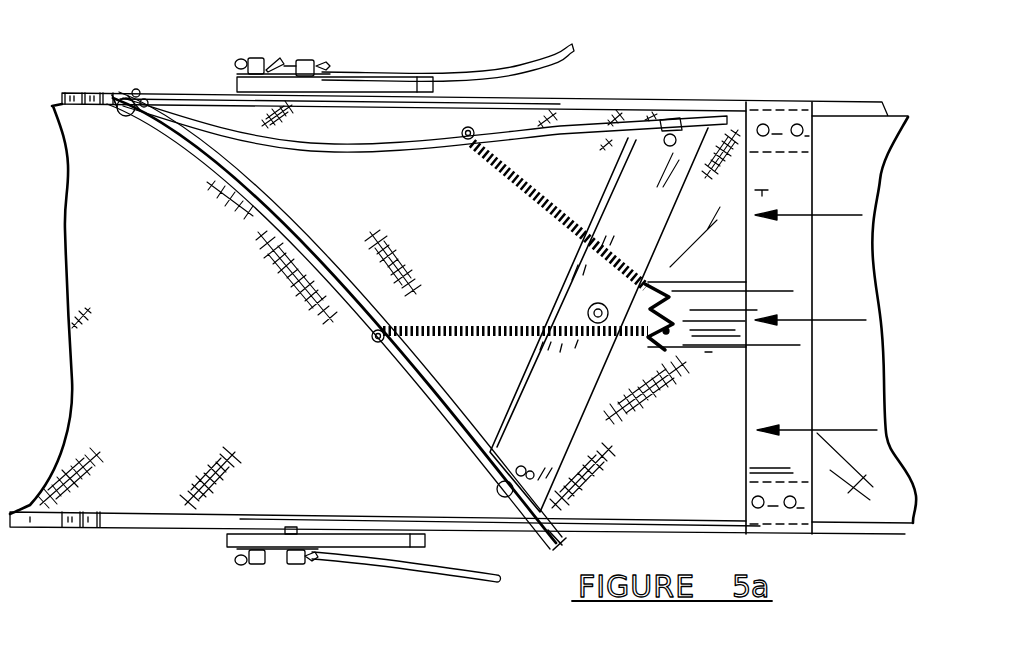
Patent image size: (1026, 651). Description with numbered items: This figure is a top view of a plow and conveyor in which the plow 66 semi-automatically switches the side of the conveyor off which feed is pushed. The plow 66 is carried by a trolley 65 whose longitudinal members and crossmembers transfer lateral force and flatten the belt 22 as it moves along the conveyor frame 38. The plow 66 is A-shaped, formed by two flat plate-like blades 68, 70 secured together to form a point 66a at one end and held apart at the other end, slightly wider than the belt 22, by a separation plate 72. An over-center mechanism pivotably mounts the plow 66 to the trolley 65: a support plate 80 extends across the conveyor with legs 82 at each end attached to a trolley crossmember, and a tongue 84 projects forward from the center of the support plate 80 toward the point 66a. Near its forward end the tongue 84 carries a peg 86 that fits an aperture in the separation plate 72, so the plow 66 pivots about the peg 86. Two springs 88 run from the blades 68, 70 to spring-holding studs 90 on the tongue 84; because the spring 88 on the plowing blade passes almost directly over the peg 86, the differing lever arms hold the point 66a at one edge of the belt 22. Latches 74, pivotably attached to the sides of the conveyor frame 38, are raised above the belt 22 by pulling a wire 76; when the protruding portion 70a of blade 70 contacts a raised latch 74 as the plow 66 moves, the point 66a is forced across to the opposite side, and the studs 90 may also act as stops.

The belt 22 is at (163, 488).
The conveyor frame 38 is at (698, 108).
The trolley 65 is at (97, 92).
The plow 66 is at (428, 241).
The point 66a is at (118, 92).
The plow blade 68 is at (383, 146).
The plow blade 70 is at (192, 150).
The protruding portion 70a is at (546, 541).
The separation plate 72 is at (596, 413).
The latch 74 is at (348, 82).
The wire 76 is at (550, 54).
The support plate 80 is at (800, 367).
The legs 82 is at (785, 97).
The tongue 84 is at (708, 300).
The peg 86 is at (590, 310).
The springs 88 is at (563, 226).
The spring-holding stud 90 is at (676, 330).